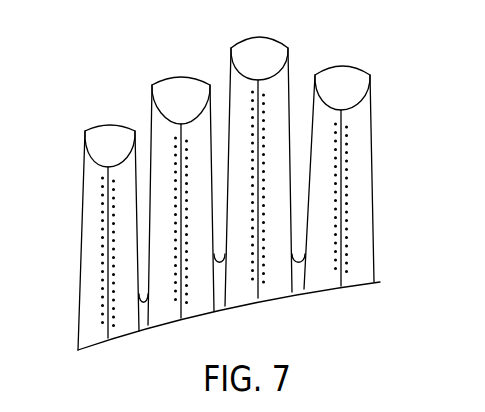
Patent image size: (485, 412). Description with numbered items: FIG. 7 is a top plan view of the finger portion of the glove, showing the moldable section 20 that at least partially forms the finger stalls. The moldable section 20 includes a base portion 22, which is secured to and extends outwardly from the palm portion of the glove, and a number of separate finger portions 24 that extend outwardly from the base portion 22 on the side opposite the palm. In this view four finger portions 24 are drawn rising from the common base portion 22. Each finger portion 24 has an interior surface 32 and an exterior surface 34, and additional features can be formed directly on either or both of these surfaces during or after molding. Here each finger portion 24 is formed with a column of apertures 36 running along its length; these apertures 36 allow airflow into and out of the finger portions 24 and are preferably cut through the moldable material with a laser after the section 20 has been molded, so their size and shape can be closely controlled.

The moldable section 20 is at (76, 116).
The base portion 22 is at (124, 327).
The finger portions 24 is at (83, 197).
The interior surface 32 is at (289, 68).
The exterior surface 34 is at (287, 75).
The apertures 36 is at (103, 263).